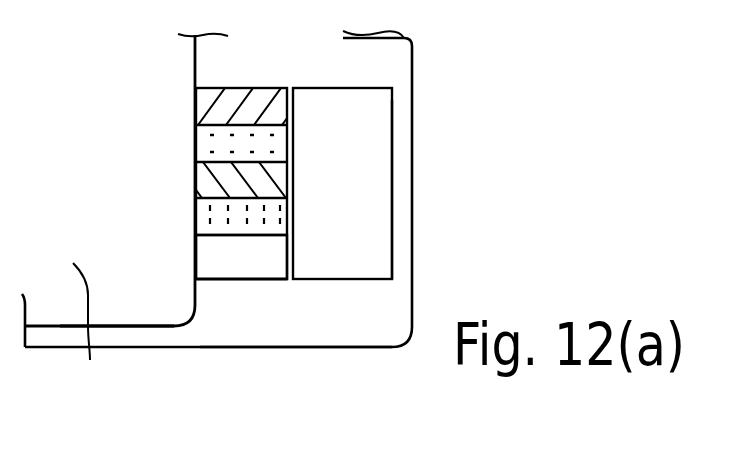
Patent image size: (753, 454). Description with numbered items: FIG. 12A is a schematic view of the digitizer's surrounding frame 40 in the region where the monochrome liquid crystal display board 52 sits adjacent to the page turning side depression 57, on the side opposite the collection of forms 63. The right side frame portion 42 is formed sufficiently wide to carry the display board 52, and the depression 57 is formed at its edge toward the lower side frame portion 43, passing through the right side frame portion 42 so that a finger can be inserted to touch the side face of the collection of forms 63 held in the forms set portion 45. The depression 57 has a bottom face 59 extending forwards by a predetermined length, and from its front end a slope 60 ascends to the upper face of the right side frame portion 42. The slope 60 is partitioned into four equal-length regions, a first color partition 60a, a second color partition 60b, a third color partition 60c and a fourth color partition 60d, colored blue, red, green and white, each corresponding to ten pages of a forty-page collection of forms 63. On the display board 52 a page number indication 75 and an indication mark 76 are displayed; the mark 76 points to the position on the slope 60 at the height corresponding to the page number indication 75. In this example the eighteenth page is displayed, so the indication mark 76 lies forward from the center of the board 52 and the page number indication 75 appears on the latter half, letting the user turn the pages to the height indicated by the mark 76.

The surrounding frame 40 is at (418, 78).
The right side frame portion 42 is at (348, 310).
The lower side frame portion 43 is at (50, 338).
The forms set portion 45 is at (155, 328).
The monochrome liquid crystal display board 52 is at (401, 217).
The page turning side depression 57 is at (259, 287).
The bottom face 59 is at (232, 263).
The slope 60 is at (210, 139).
The first color partition 60a is at (245, 97).
The second color partition 60b is at (200, 148).
The third color partition 60c is at (200, 188).
The fourth color partition 60d is at (205, 226).
The collection of forms 63 is at (98, 330).
The page number indication 75 is at (362, 238).
The indication mark 76 is at (301, 153).